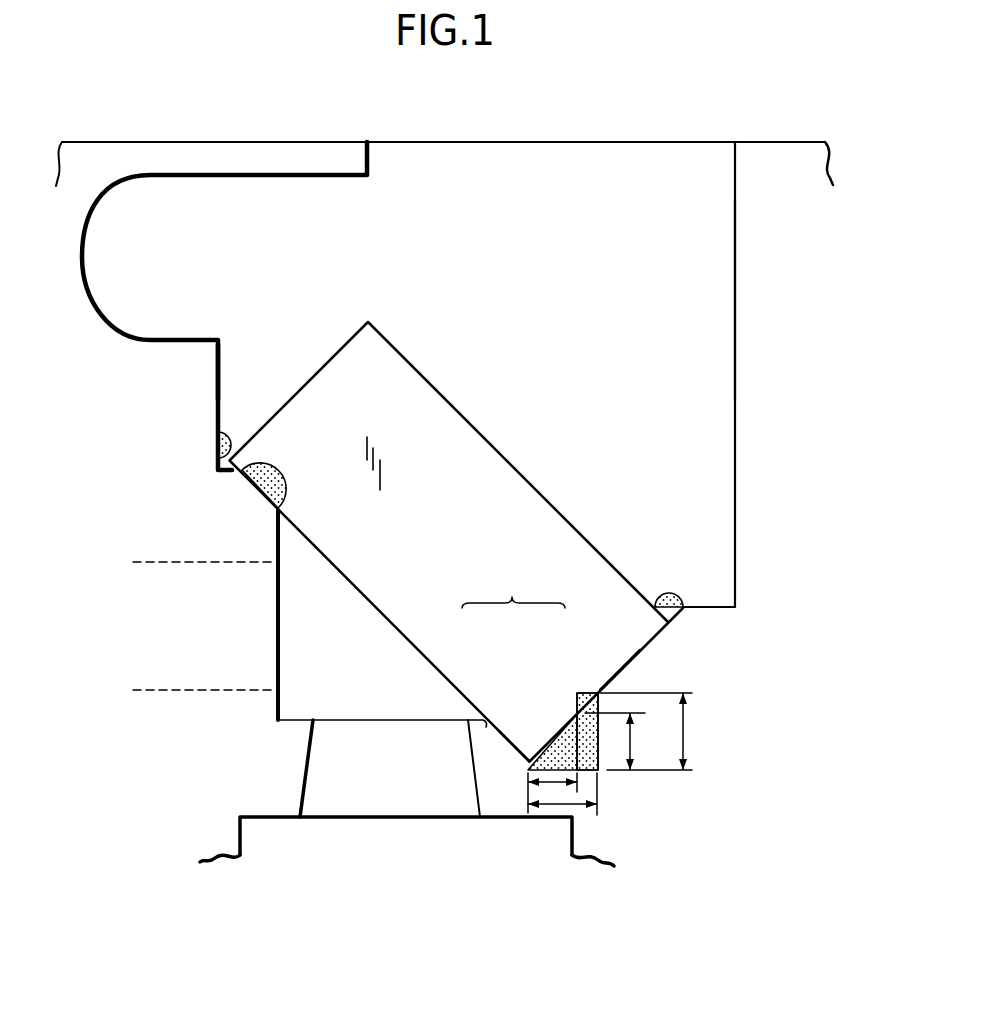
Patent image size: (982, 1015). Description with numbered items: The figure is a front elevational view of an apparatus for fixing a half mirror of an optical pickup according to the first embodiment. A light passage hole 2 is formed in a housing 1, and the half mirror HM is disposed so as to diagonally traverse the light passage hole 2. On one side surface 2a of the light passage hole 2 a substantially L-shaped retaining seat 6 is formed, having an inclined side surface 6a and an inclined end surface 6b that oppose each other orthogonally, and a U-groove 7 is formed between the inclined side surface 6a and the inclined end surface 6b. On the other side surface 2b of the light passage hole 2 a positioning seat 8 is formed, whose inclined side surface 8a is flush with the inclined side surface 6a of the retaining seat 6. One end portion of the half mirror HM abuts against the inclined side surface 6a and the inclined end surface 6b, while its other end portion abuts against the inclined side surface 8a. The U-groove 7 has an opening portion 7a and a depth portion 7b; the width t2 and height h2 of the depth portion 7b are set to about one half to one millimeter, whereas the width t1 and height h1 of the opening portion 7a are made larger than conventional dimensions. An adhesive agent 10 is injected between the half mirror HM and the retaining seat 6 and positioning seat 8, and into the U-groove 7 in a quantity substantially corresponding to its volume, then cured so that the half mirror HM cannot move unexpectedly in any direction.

The housing 1 is at (764, 176).
The light passage hole 2 is at (408, 346).
The one side surface of the light passage hole 2a is at (734, 269).
The other side surface of the light passage hole 2b is at (232, 362).
The retaining seat 6 is at (550, 664).
The inclined side surface 6a is at (505, 735).
The inclined end surface 6b is at (623, 660).
The U-groove 7 is at (652, 709).
The opening portion 7a is at (552, 742).
The depth portion 7b is at (557, 716).
The positioning seat 8 is at (373, 674).
The inclined side surface 8a is at (252, 482).
The adhesive agent 10 is at (265, 476).
The half mirror HM is at (507, 482).
The height of the opening portion h1 is at (660, 731).
The height of the depth portion h2 is at (627, 741).
The width of the opening portion t1 is at (558, 818).
The width of the depth portion t2 is at (555, 783).